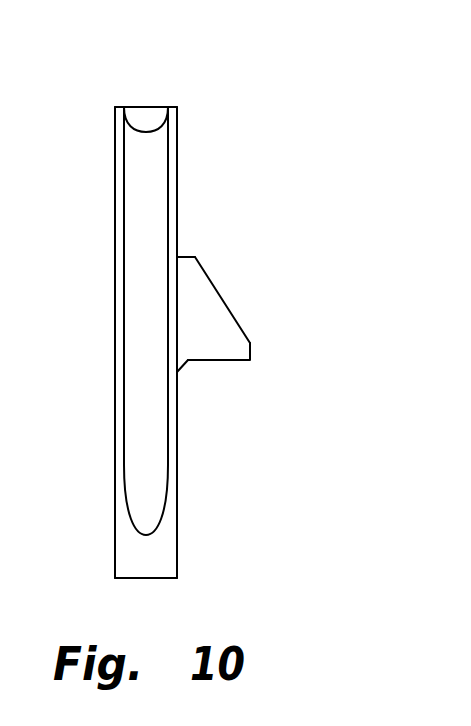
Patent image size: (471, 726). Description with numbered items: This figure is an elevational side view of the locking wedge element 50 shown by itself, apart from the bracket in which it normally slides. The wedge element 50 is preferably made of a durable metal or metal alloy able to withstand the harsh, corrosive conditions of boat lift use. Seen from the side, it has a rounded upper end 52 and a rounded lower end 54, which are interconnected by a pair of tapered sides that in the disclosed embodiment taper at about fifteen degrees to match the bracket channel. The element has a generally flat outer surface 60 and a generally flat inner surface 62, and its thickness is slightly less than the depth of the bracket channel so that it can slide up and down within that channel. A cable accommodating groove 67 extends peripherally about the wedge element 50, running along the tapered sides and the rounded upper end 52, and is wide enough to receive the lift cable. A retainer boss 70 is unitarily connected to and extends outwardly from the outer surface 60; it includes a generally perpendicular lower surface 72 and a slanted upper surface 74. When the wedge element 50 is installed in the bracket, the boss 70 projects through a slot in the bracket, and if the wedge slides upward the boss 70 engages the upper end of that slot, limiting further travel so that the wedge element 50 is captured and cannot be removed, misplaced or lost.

The wedge element 50 is at (178, 160).
The rounded upper end 52 is at (118, 107).
The rounded lower end 54 is at (145, 579).
The outer surface 60 is at (177, 453).
The inner surface 62 is at (116, 445).
The cable accommodating groove 67 is at (147, 274).
The retainer boss 70 is at (208, 273).
The lower surface 72 is at (218, 362).
The slanted upper surface 74 is at (233, 312).